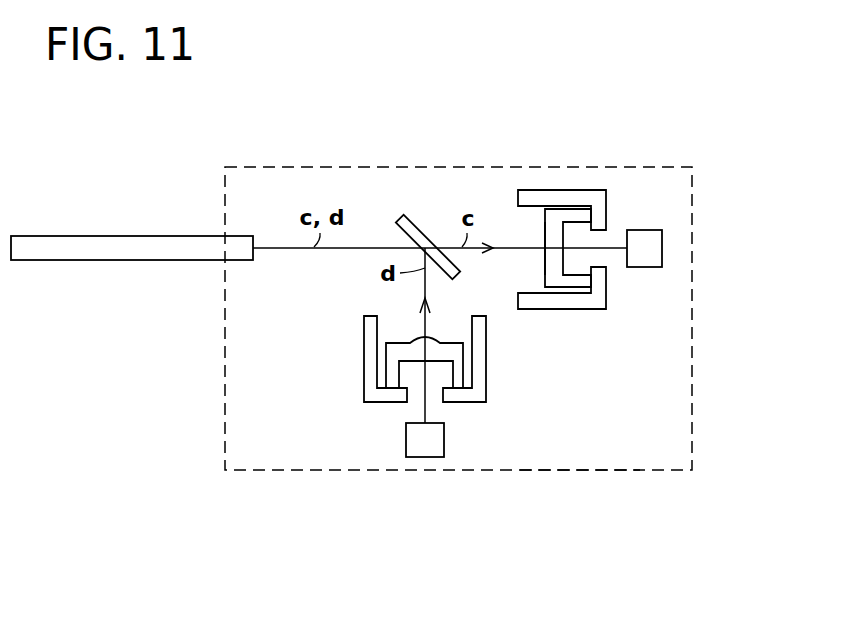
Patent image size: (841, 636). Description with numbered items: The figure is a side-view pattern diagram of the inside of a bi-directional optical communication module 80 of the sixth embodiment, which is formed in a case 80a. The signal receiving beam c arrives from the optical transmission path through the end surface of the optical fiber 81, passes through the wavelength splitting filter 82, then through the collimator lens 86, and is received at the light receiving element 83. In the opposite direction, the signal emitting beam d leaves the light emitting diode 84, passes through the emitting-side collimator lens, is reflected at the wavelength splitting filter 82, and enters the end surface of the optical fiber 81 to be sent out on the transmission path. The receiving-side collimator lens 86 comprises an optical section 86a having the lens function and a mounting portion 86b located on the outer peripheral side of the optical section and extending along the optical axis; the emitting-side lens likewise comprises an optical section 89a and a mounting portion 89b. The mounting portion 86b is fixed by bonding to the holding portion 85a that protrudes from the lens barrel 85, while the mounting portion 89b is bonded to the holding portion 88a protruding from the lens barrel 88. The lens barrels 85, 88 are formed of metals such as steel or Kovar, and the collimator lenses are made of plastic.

The optical communication module 80 is at (640, 483).
The case 80a is at (568, 470).
The optical fiber 81 is at (70, 242).
The wavelength splitting filter 82 is at (415, 218).
The light receiving element 83 is at (662, 248).
The light emitting diode 84 is at (427, 447).
The lens barrel 85 is at (561, 190).
The holding portion 85a is at (598, 287).
The collimator lens 86 is at (530, 218).
The optical section 86a is at (542, 236).
The mounting portion 86b is at (577, 282).
The lens barrel 88 is at (363, 341).
The holding portion 88a is at (387, 395).
The optical section 89a is at (413, 337).
The mounting portion 89b is at (457, 375).